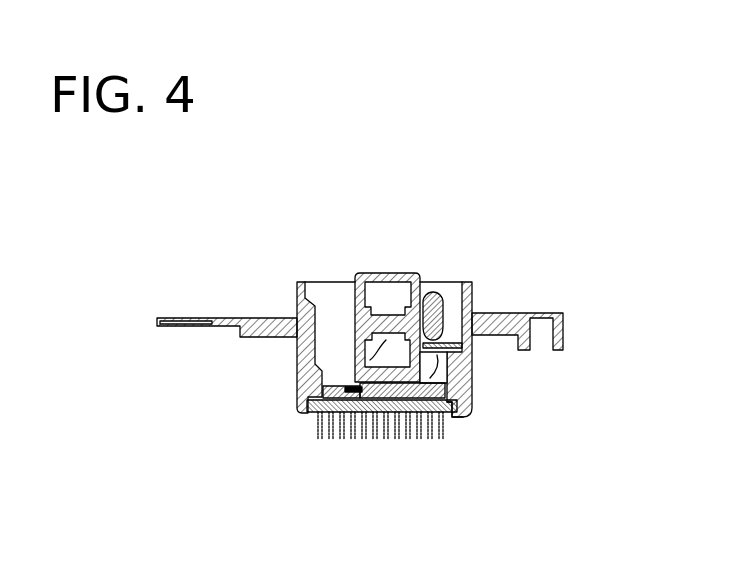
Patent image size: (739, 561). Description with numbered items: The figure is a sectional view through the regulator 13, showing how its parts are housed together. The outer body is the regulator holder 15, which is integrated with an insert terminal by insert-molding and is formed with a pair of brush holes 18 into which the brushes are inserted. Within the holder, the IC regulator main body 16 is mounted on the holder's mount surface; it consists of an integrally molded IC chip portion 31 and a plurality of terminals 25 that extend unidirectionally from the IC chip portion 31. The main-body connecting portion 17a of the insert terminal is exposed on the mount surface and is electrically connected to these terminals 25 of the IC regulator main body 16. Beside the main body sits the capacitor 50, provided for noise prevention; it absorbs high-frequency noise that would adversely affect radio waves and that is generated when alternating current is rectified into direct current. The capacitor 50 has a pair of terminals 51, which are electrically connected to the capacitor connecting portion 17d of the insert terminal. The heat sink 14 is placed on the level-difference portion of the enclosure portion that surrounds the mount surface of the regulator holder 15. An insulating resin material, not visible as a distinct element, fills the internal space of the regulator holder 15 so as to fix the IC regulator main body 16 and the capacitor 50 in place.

The regulator 13 is at (266, 282).
The heat sink 14 is at (453, 414).
The regulator holder 15 is at (297, 366).
The IC regulator main body 16 is at (466, 415).
The main-body connecting portion 17a is at (340, 384).
The capacitor connecting portion 17d is at (452, 372).
The brush holes 18 is at (387, 298).
The terminals 25 is at (345, 412).
The IC chip portion 31 is at (395, 404).
The capacitor 50 is at (441, 303).
The terminals of the capacitor 51 is at (455, 338).